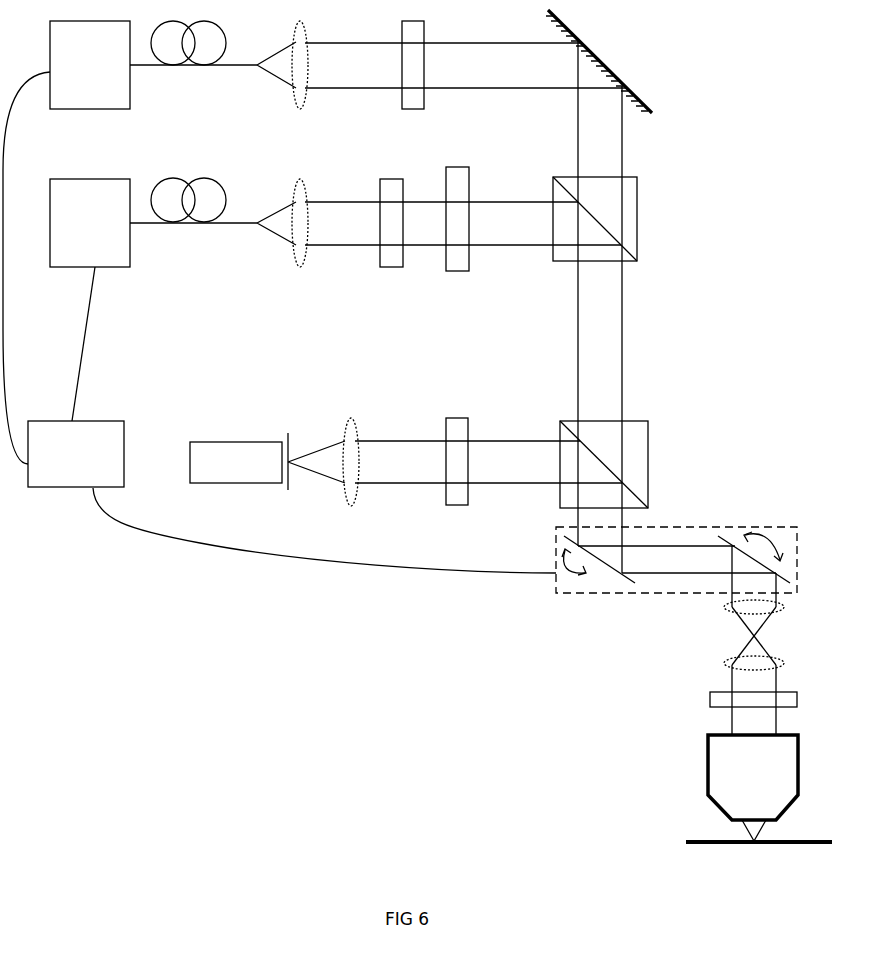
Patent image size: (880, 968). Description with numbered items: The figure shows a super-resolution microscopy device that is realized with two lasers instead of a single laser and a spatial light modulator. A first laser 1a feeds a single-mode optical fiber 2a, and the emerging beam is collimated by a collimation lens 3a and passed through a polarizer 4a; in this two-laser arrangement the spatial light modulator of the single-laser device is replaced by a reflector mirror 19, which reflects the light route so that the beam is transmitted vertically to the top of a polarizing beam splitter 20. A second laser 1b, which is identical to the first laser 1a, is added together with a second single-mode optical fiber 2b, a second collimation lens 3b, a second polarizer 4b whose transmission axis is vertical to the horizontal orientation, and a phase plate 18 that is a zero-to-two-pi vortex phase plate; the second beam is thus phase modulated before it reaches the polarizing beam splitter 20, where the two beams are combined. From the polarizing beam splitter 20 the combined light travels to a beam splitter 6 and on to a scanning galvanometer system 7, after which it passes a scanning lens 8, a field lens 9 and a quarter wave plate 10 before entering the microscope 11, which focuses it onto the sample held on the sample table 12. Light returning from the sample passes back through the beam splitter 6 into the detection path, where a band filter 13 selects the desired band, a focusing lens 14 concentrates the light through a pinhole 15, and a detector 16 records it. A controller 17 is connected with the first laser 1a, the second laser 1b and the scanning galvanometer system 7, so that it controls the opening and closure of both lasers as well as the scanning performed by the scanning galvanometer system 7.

The first laser 1a is at (90, 65).
The second laser 1b is at (90, 223).
The single-mode optical fiber 2a is at (193, 58).
The second single-mode optical fiber 2b is at (193, 216).
The collimation lens 3a is at (285, 78).
The second collimation lens 3b is at (282, 233).
The polarizer 4a is at (414, 80).
The second polarizer 4b is at (393, 238).
The beam splitter 6 is at (615, 464).
The scanning galvanometer system 7 is at (689, 560).
The scanning lens 8 is at (772, 611).
The field lens 9 is at (772, 658).
The ¼ wave plate 10 is at (771, 698).
The microscope 11 is at (771, 788).
The sample table 12 is at (760, 830).
The band filter 13 is at (457, 478).
The focusing lens 14 is at (355, 474).
The pinhole 15 is at (312, 479).
The detector 16 is at (236, 462).
The controller 17 is at (279, 322).
The phase plate 18 is at (460, 232).
The reflector mirror 19 is at (599, 61).
The polarizing beam splitter 20 is at (609, 219).